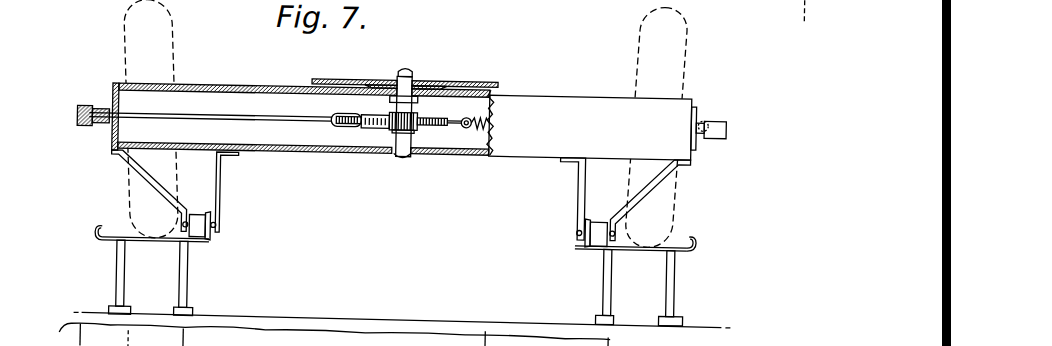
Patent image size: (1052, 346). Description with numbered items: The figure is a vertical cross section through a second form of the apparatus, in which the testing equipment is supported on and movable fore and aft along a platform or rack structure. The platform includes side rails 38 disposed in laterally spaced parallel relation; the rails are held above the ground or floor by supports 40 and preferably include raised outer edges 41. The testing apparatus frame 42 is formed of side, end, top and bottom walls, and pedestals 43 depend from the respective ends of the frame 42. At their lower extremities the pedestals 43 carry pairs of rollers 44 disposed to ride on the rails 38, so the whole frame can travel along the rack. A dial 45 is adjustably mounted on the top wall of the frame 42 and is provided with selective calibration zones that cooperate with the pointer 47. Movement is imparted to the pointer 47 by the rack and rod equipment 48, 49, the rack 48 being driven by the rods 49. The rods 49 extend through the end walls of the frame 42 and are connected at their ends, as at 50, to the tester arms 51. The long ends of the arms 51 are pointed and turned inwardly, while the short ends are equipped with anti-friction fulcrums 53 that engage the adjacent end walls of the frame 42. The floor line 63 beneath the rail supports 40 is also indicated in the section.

The side rails 38 is at (143, 234).
The rail supports 40 is at (120, 284).
The raised outer edges 41 is at (110, 218).
The testing apparatus frame 42 is at (347, 149).
The pedestals 43 is at (224, 178).
The rollers 44 is at (213, 238).
The dial 45 is at (316, 77).
The pointer 47 is at (413, 75).
The rack equipment 48 is at (376, 126).
The rods 49 is at (207, 113).
The rod connection 50 is at (101, 108).
The tester arms 51 is at (78, 120).
The anti-friction fulcrums 53 is at (707, 110).
The floor 63 is at (66, 333).